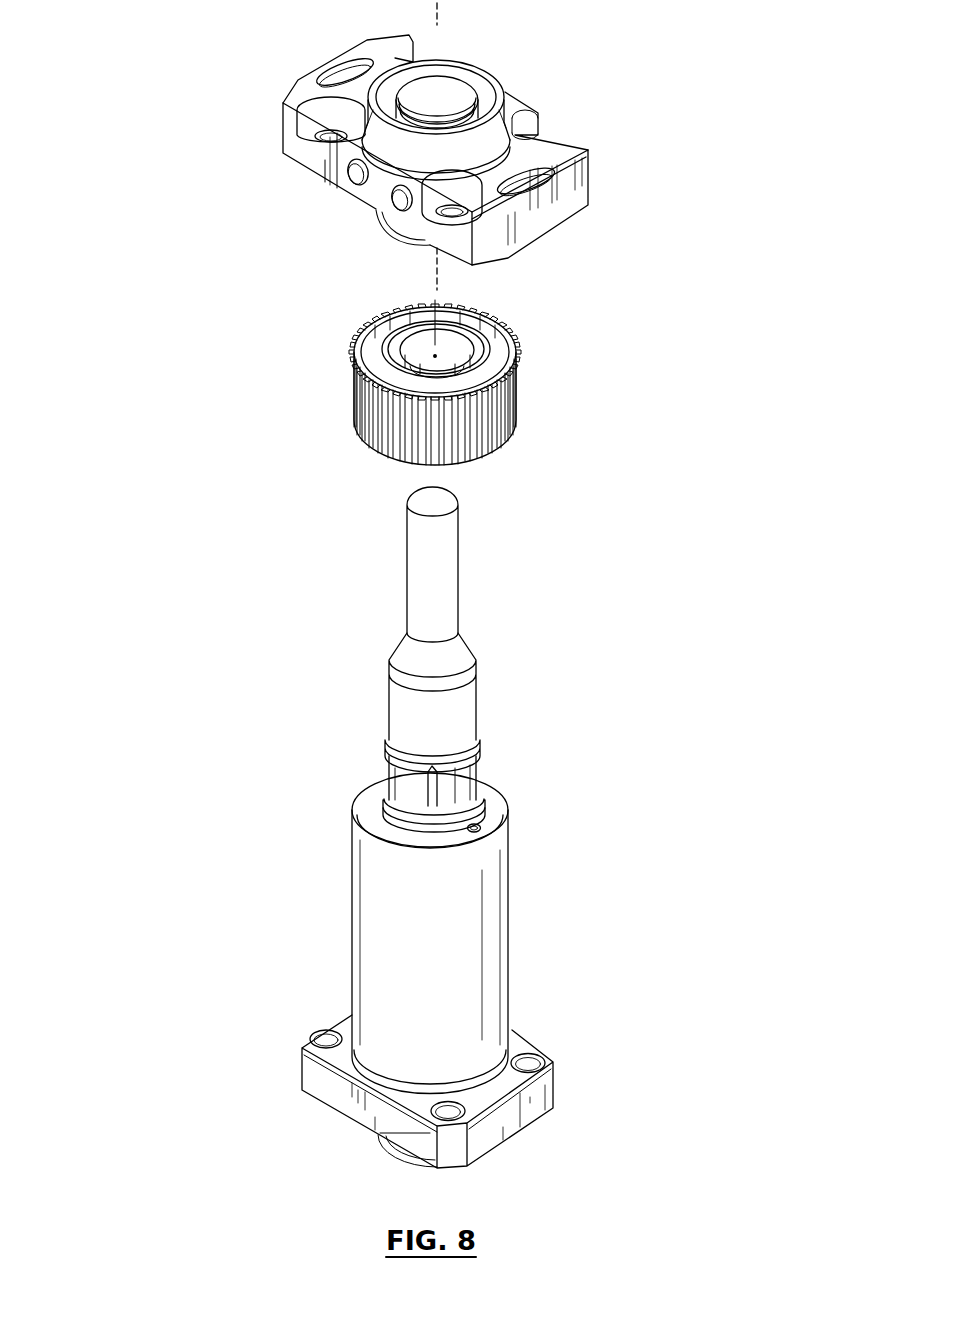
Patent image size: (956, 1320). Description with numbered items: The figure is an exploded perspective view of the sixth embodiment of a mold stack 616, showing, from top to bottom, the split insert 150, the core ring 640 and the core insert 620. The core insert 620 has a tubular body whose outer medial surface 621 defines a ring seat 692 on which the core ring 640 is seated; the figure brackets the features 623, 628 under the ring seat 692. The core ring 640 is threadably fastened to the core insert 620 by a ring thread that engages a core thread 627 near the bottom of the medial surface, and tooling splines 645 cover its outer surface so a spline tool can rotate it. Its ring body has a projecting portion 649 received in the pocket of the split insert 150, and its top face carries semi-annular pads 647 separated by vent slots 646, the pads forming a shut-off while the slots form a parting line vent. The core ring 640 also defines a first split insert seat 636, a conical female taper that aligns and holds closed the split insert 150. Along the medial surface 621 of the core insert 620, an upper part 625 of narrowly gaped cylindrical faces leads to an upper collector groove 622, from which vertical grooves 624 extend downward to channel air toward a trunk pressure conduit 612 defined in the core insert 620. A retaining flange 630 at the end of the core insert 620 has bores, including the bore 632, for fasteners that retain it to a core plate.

The split insert 150 is at (264, 187).
The mold stack 616 is at (125, 776).
The core ring 640 is at (326, 420).
The first split insert seat 636 is at (353, 352).
The semi-annular pads 647 is at (487, 316).
The vent slots 646 is at (497, 323).
The projecting portion 649 is at (505, 390).
The tooling splines 645 is at (507, 437).
The core insert 620 is at (304, 805).
The upper part of the upper medial surface 625 is at (478, 745).
The upper collector groove 622 is at (482, 755).
The outer medial surface 621 is at (495, 759).
The vertical grooves 624 is at (436, 786).
The flange upper portion 623 is at (467, 790).
The flange lower portion 628 is at (490, 808).
The ring seat 692 is at (609, 786).
The trunk pressure conduit 612 is at (482, 828).
The core thread 627 is at (357, 802).
The mounting hole 632 is at (535, 1055).
The retaining flange 630 is at (533, 1101).